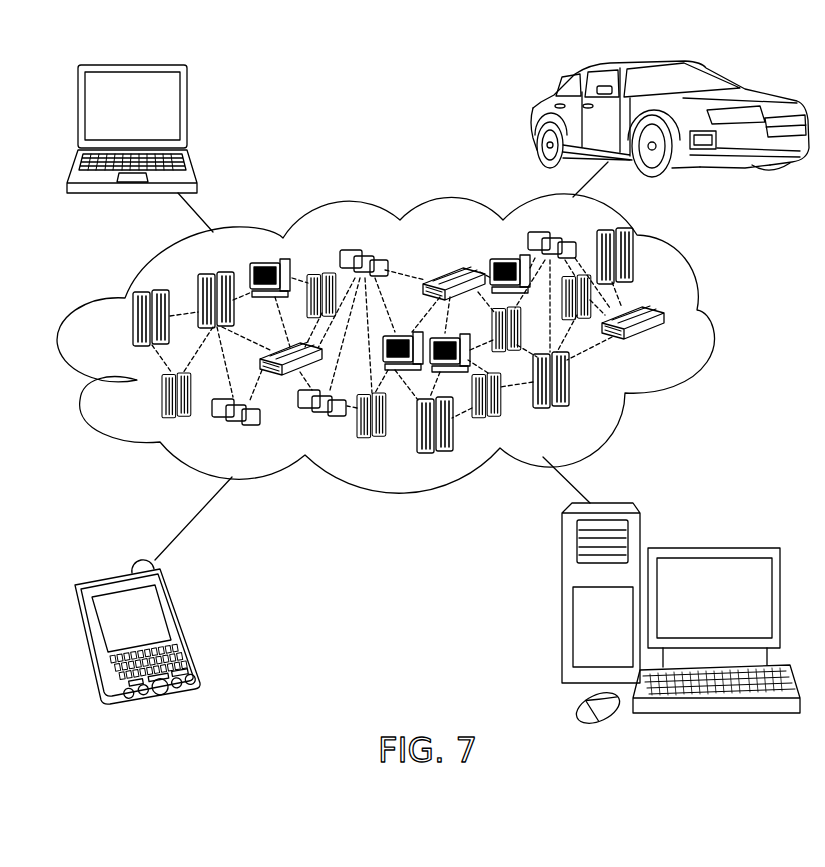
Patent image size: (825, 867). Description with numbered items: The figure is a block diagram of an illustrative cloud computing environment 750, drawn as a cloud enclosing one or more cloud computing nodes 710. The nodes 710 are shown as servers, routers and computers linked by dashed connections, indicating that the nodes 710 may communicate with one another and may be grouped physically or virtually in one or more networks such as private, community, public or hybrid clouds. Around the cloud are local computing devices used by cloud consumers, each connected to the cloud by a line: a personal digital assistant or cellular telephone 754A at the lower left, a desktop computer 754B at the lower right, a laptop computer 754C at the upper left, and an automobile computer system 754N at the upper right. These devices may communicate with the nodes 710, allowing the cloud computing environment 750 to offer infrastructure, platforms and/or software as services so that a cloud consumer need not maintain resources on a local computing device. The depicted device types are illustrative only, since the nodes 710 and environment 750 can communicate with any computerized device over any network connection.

The cloud computing environment 750 is at (714, 318).
The cloud computing nodes 710 is at (664, 346).
The laptop computer 754C is at (188, 112).
The automobile computer system 754N is at (537, 118).
The personal digital assistant (PDA) or cellular telephone 754A is at (183, 628).
The desktop computer 754B is at (710, 548).